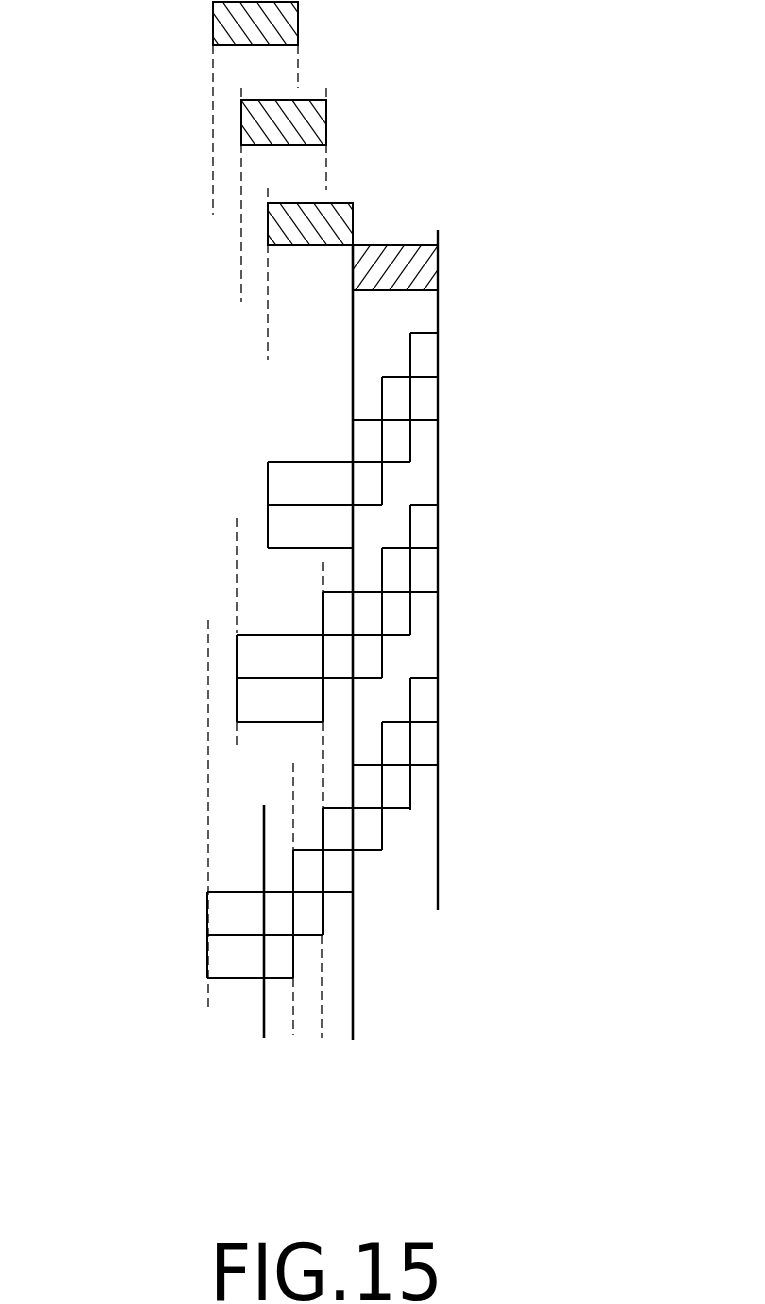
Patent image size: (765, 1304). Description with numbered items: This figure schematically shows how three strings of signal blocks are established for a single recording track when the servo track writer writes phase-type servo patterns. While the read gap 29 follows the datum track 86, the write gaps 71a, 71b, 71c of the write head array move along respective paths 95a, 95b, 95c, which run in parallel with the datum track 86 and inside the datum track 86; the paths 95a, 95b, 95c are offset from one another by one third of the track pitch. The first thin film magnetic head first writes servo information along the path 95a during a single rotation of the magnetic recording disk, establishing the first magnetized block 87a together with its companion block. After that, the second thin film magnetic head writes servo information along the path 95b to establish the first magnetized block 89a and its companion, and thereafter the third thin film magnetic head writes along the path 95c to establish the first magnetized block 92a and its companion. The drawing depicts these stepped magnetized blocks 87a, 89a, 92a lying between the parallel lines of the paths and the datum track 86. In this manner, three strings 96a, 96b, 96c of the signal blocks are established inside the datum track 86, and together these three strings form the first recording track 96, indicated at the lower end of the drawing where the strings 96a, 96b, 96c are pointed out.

The write gap 71a is at (334, 208).
The write gap 71b is at (320, 121).
The write gap 71c is at (290, 24).
The read gap 29 is at (433, 262).
The path 95a is at (265, 330).
The path 95b is at (240, 270).
The path 95c is at (211, 170).
The first magnetized block 87a is at (433, 355).
The first magnetized block 89a is at (403, 400).
The first magnetized block 92a is at (372, 610).
The datum track 86 is at (440, 840).
The first recording track 96 is at (364, 1017).
The string of signal blocks 96a is at (335, 1028).
The string of signal blocks 96b is at (307, 1028).
The string of signal blocks 96c is at (278, 1029).